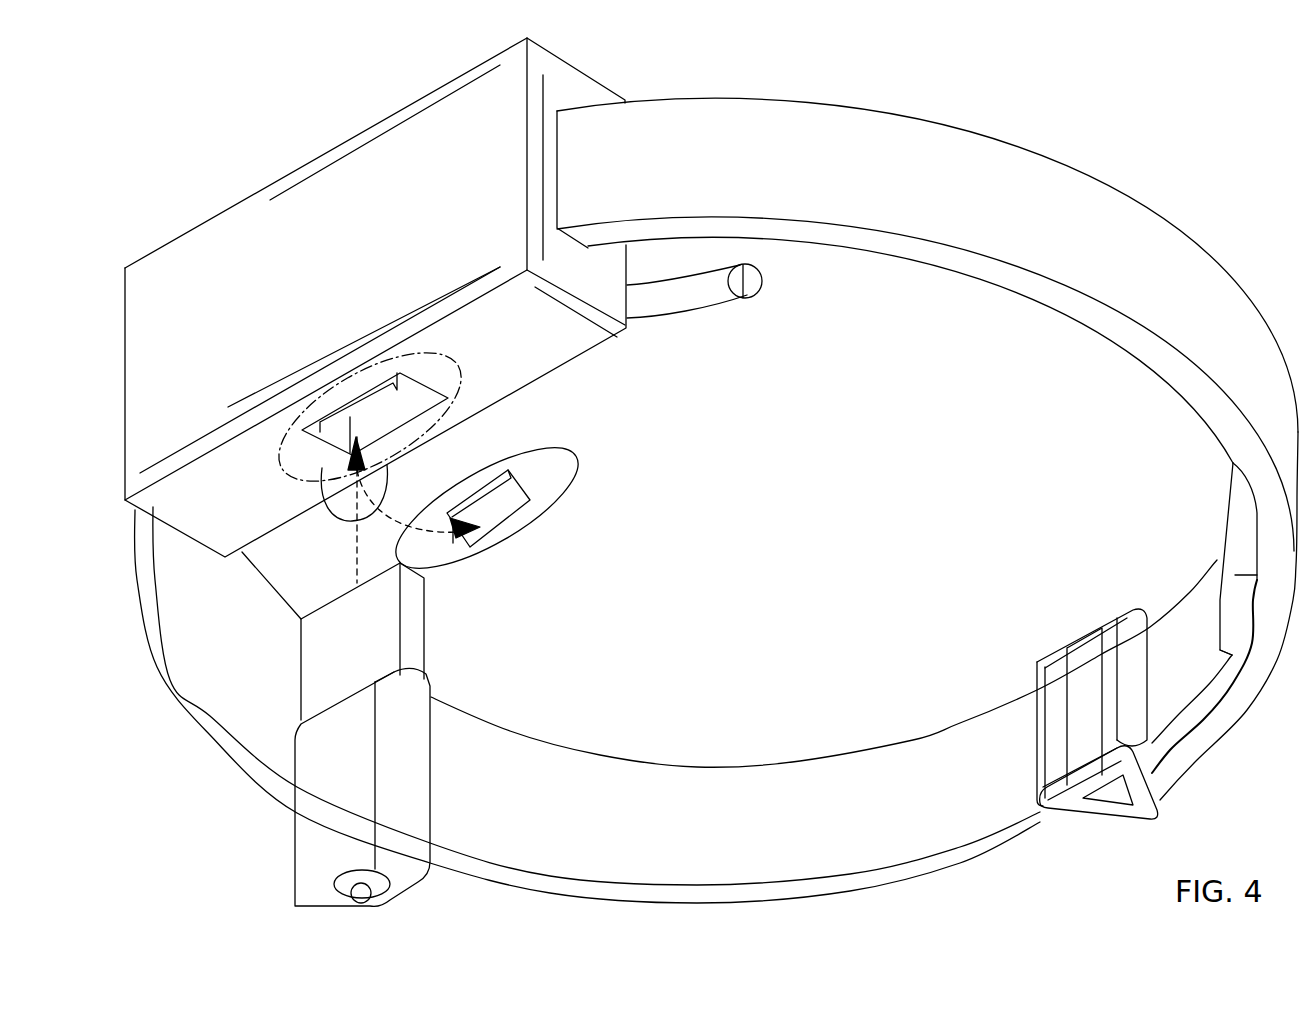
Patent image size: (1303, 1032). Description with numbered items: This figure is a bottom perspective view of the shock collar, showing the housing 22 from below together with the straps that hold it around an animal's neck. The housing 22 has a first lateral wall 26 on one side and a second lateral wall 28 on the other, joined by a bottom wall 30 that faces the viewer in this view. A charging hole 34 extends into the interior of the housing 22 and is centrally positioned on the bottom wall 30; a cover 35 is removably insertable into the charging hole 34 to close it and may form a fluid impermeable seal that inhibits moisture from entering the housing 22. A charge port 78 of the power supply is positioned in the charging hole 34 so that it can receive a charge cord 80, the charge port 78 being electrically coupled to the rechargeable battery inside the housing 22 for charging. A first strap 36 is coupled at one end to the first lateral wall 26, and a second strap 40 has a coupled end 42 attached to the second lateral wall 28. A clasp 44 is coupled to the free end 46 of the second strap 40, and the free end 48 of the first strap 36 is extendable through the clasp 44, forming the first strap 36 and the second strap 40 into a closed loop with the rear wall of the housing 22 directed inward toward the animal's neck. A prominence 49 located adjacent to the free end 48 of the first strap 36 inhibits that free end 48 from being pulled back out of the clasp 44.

The housing 22 is at (167, 192).
The first lateral wall 26 is at (175, 533).
The second lateral wall 28 is at (567, 93).
The bottom wall 30 is at (537, 340).
The charging hole 34 is at (333, 447).
The cover 35 is at (513, 513).
The first strap 36 is at (776, 886).
The second strap 40 is at (1167, 222).
The coupled end 42 is at (557, 170).
The clasp 44 is at (1157, 818).
The free end 46 is at (1072, 800).
The free end 48 is at (1250, 525).
The prominence 49 is at (1230, 552).
The charge port 78 is at (390, 387).
The charge cord 80 is at (382, 763).